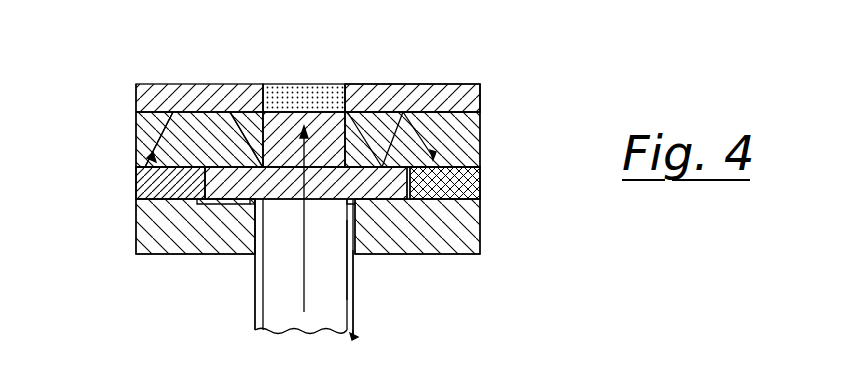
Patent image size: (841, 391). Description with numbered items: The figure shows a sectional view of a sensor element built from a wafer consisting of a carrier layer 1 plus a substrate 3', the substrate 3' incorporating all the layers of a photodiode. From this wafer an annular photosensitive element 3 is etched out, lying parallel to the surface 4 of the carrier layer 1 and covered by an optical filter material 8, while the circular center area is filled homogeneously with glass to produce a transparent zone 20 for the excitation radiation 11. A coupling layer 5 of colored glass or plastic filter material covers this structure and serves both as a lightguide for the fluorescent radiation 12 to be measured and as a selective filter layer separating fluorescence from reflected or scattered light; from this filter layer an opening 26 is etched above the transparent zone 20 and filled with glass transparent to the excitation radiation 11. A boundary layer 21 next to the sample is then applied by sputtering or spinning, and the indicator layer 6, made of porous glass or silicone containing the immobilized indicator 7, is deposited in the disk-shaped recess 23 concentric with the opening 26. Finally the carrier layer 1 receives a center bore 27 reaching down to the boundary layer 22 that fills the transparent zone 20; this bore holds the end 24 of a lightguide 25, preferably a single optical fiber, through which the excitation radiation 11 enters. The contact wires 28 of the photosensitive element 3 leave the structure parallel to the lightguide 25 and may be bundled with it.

The carrier layer 1 is at (481, 242).
The photosensitive element 3 is at (316, 210).
The thin-film substrate 3' is at (123, 185).
The surface of the carrier layer 4 is at (481, 166).
The coupling layer 5 is at (190, 149).
The indicator layer 6 is at (348, 83).
The indicator substance 7 is at (322, 83).
The optical filter material 8 is at (195, 113).
The excitation radiation 11 is at (300, 272).
The fluorescent radiation 12 is at (137, 127).
The transparent zone 20 is at (235, 206).
The boundary layer 21 is at (137, 83).
The boundary layer 22 is at (380, 232).
The recess 23 is at (280, 83).
The end of the lightguide 24 is at (318, 220).
The lightguide 25 is at (353, 335).
The opening 26 is at (255, 115).
The center bore 27 is at (253, 220).
The contact wires 28 is at (255, 307).